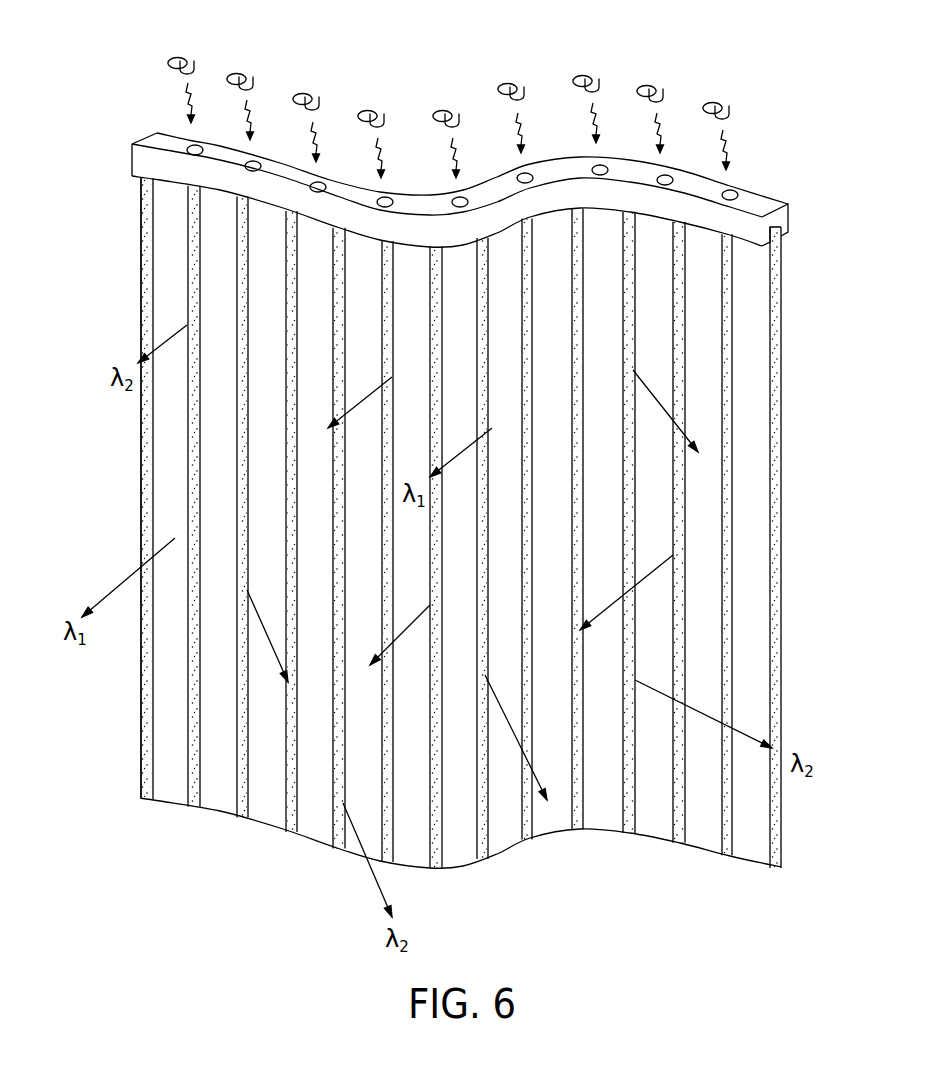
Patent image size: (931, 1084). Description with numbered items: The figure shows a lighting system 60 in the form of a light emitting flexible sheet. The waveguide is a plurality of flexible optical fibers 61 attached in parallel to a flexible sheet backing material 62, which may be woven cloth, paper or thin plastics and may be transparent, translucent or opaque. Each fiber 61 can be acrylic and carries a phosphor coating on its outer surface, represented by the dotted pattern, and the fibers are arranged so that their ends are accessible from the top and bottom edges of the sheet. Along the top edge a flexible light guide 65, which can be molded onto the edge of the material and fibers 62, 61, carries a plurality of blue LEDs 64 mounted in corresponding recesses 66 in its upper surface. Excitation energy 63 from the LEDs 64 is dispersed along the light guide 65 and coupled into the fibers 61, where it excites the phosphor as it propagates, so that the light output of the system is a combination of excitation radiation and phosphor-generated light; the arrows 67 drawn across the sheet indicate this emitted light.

The lighting system 60 is at (453, 589).
The flexible optical fibers 61 is at (195, 423).
The flexible sheet backing material 62 is at (502, 851).
The excitation energy 63 is at (307, 130).
The blue LEDs 64 is at (452, 104).
The flexible light guide 65 is at (140, 160).
The recesses 66 is at (190, 146).
The emitted light arrows 67 is at (117, 586).